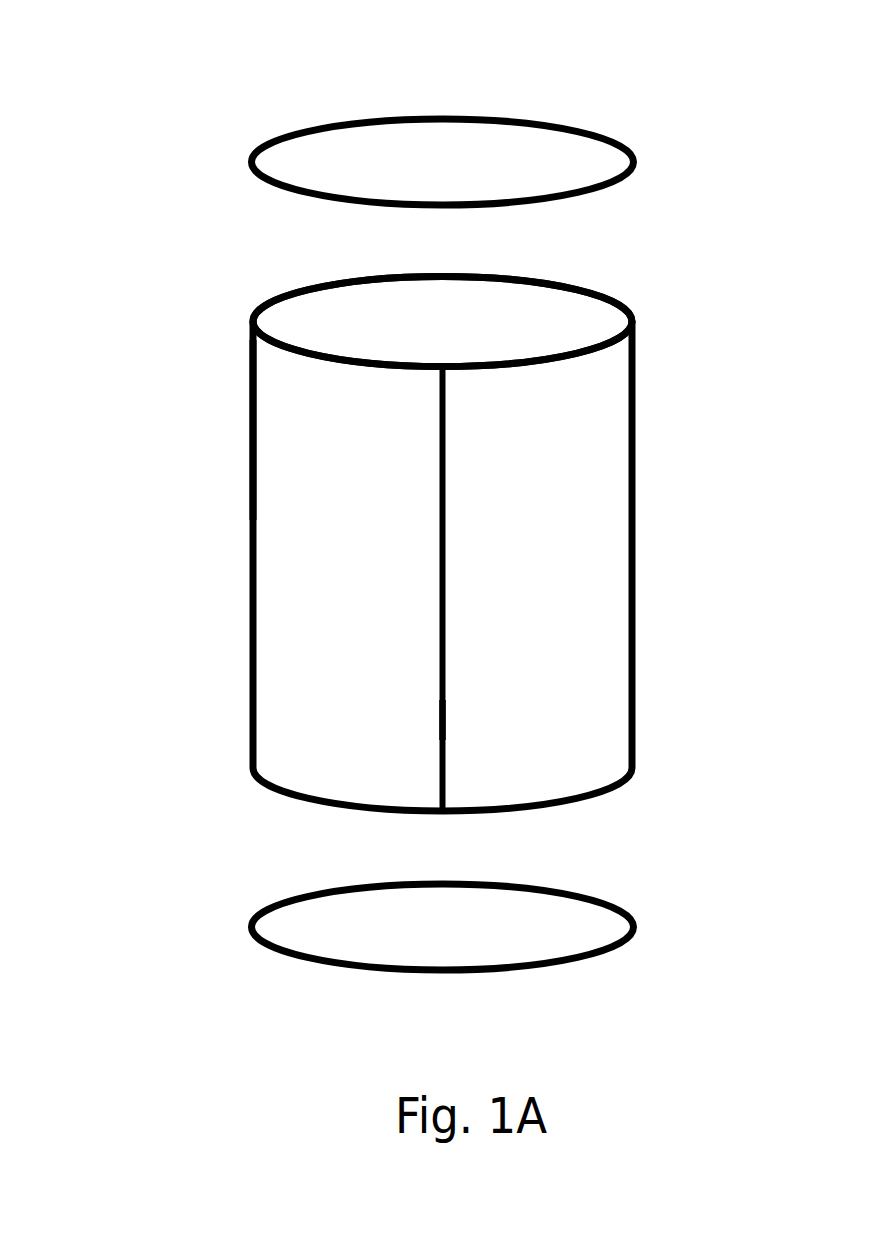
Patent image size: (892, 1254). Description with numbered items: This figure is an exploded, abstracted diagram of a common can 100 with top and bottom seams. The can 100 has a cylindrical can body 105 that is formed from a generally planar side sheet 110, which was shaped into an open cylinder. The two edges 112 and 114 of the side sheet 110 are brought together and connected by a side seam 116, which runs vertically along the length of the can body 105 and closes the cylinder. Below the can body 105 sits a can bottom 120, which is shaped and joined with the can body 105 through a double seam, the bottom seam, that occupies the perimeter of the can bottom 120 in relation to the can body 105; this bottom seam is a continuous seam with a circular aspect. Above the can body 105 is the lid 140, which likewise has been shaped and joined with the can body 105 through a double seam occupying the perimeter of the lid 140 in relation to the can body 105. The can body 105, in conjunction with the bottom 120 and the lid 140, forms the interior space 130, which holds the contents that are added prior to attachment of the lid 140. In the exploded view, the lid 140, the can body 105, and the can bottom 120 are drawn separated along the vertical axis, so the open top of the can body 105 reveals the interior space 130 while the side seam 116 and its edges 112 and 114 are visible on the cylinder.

The can 100 is at (172, 178).
The cylindrical can body 105 is at (240, 429).
The side sheet 110 is at (300, 597).
The edge 112 is at (430, 720).
The edge 114 is at (455, 718).
The side seam 116 is at (443, 668).
The can bottom 120 is at (528, 925).
The interior space 130 is at (480, 326).
The lid 140 is at (528, 162).